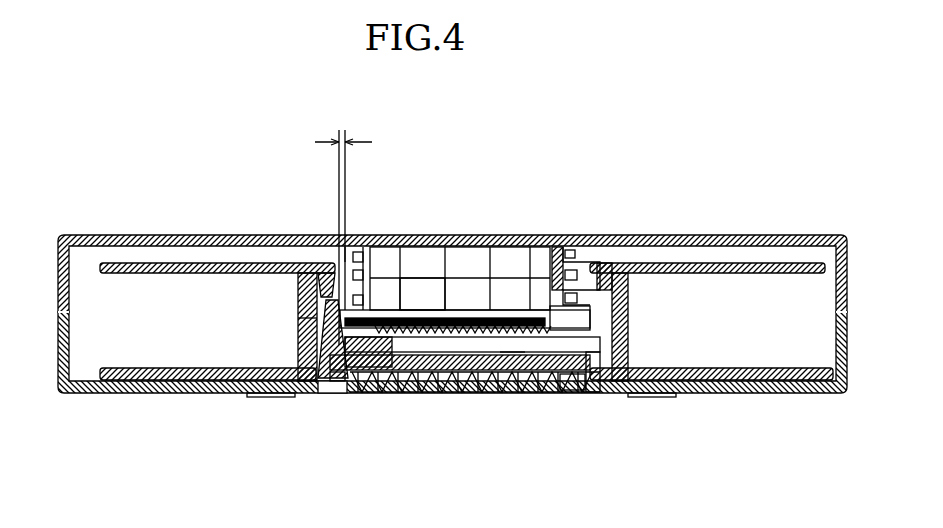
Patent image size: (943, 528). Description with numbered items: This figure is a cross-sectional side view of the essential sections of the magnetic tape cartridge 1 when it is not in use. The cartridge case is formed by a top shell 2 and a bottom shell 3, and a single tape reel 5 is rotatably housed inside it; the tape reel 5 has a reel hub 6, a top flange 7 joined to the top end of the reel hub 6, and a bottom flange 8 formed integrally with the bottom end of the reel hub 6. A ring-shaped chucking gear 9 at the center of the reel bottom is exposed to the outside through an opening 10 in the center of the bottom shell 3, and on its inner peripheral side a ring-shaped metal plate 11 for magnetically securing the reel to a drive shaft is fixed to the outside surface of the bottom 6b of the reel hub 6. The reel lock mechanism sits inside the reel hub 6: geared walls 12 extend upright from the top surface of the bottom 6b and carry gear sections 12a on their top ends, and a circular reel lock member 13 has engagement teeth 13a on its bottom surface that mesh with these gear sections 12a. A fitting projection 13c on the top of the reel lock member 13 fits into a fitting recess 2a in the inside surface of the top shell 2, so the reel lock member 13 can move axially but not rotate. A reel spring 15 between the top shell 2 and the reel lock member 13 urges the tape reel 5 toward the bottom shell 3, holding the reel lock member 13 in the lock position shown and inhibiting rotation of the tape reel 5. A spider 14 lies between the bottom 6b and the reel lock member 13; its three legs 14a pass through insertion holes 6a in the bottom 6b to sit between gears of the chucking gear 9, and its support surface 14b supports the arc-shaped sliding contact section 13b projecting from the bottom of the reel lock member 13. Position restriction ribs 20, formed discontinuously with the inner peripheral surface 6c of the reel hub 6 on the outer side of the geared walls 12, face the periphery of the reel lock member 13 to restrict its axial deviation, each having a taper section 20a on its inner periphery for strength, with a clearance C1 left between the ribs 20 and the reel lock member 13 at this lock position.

The magnetic tape cartridge 1 is at (50, 224).
The top shell 2 is at (8, 312).
The fitting recess 2a is at (465, 258).
The bottom shell 3 is at (8, 312).
The tape reel 5 is at (148, 152).
The reel hub 6 is at (300, 300).
The insertion holes 6a is at (628, 365).
The bottom of the reel hub 6b is at (512, 352).
The inner peripheral surface of the reel hub 6c is at (298, 318).
The top flange 7 is at (180, 263).
The bottom flange 8 is at (135, 368).
The chucking gear 9 is at (325, 393).
The opening 10 is at (600, 390).
The metal plate 11 is at (545, 370).
The geared walls 12 is at (383, 368).
The gear sections 12a is at (338, 385).
The reel lock member 13 is at (500, 318).
The engagement teeth 13a is at (590, 330).
The sliding contact section 13b is at (466, 352).
The fitting projection 13c is at (420, 288).
The spider 14 is at (425, 382).
The legs 14a is at (590, 382).
The support surface 14b is at (445, 320).
The reel spring 15 is at (598, 262).
The position restriction ribs 20 is at (320, 340).
The taper section 20a is at (322, 285).
The clearance C1 is at (347, 227).